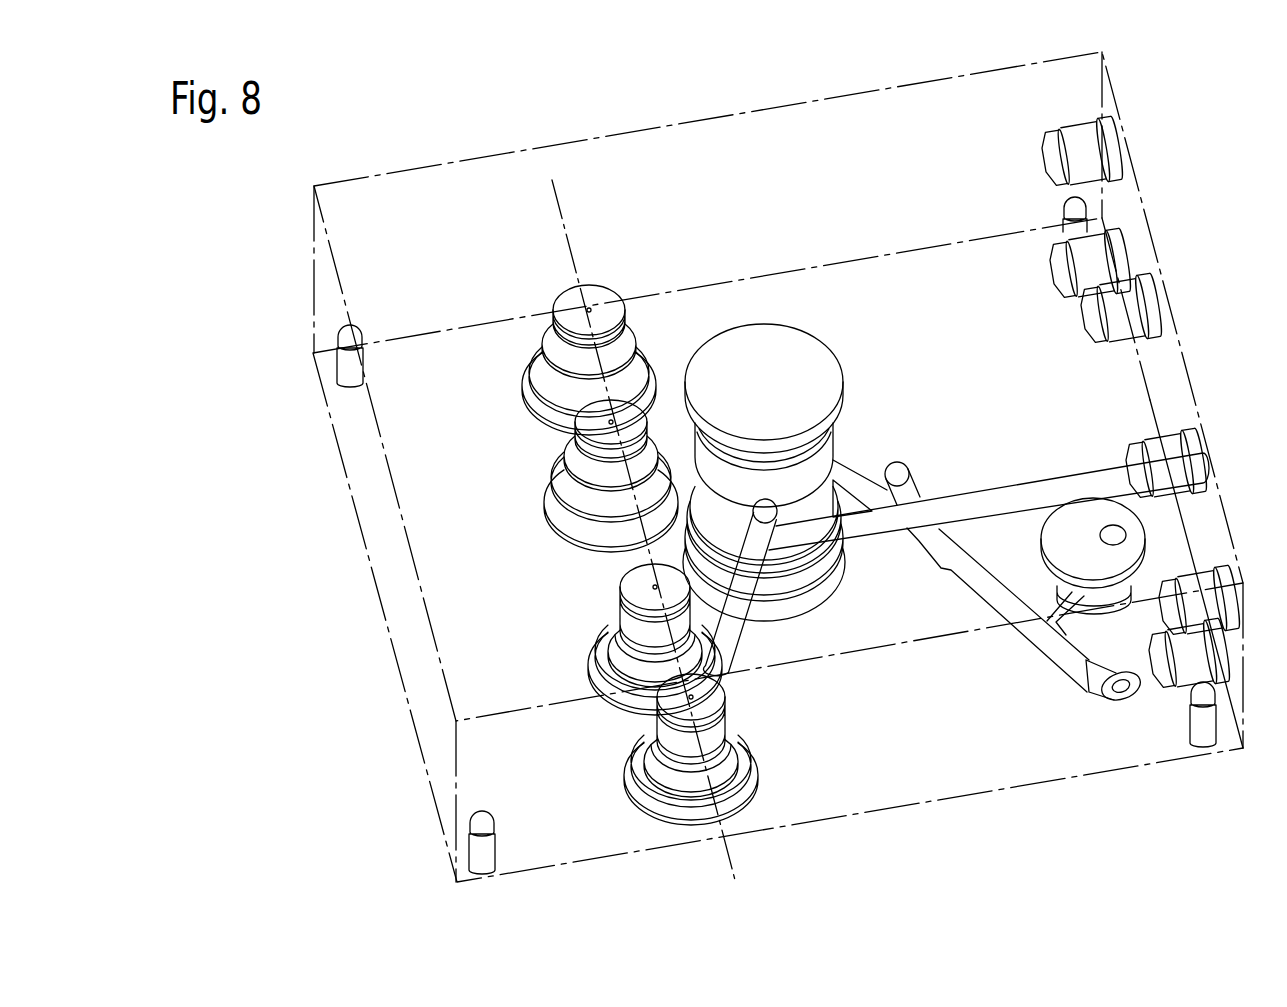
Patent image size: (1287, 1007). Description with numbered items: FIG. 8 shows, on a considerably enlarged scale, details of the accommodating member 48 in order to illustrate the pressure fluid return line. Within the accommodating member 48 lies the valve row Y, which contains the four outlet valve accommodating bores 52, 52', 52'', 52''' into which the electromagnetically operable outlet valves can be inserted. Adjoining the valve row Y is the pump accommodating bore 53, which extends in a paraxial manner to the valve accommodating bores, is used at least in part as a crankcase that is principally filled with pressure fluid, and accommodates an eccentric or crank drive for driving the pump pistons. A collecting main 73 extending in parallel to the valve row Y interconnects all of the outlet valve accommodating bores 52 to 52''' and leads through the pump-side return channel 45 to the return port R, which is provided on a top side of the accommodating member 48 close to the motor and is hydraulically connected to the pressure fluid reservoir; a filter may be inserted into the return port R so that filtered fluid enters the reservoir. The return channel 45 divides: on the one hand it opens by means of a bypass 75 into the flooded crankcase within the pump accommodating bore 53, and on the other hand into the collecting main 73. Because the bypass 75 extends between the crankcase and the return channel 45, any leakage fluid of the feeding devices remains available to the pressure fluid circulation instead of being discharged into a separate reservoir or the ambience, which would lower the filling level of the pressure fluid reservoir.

The accommodating member 48 is at (435, 190).
The outlet valve accommodating bore 52 is at (555, 360).
The outlet valve accommodating bore 52' is at (579, 476).
The outlet valve accommodating bore 52'' is at (614, 639).
The outlet valve accommodating bore 52''' is at (747, 749).
The pump accommodating bore 53 is at (718, 338).
The collecting main 73 is at (680, 548).
The bypass 75 is at (857, 490).
The return channel 45 is at (970, 577).
The return port R is at (1135, 550).
The valve row Y is at (735, 853).